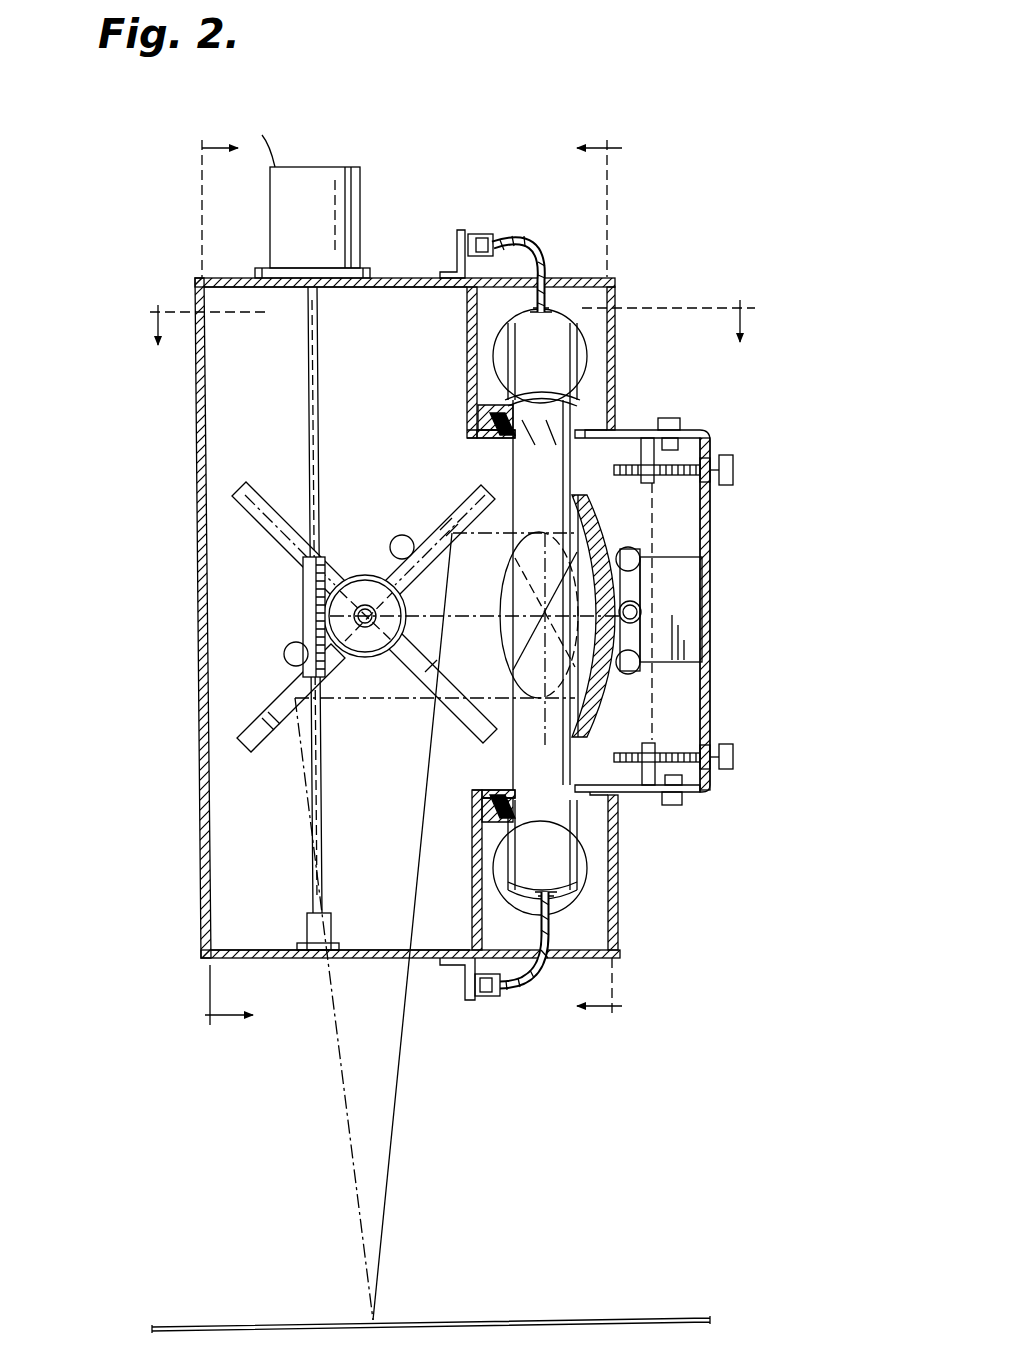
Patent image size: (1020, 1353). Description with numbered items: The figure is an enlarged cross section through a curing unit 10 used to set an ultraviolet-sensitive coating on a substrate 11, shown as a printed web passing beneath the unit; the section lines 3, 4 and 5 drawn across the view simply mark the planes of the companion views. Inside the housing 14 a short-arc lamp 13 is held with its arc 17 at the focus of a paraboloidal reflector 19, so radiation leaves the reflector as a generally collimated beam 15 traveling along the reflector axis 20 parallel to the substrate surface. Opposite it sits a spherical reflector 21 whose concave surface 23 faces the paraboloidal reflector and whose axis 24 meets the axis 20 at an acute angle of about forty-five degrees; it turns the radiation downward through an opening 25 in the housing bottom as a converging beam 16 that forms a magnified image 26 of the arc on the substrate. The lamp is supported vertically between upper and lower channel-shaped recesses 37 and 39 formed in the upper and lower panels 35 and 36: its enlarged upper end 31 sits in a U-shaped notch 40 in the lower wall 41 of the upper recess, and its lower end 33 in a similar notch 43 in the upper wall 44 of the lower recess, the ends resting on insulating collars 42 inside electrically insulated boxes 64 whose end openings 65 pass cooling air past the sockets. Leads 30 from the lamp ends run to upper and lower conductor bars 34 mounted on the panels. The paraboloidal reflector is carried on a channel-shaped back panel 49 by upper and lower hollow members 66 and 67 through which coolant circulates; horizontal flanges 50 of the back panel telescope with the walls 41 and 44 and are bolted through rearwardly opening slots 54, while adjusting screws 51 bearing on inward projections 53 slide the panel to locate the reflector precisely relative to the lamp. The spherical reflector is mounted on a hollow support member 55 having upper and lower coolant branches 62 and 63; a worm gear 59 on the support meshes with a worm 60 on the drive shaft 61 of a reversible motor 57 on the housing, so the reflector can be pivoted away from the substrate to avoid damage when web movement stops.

The section line 3- 3 is at (209, 587).
The section line 4- 4 is at (606, 582).
The section line 5- 5 is at (450, 309).
The unit 10 is at (632, 244).
The substrate 11 is at (604, 1318).
The lamp 13 is at (540, 559).
The housing 14 is at (197, 692).
The collimated beam 15 is at (522, 526).
The beam of convergent rays 16 is at (345, 1118).
The arc 17 is at (524, 640).
The paraboloidal reflector 19 is at (642, 592).
The axis of the paraboloidal reflector 20 is at (486, 615).
The spherical reflector 21 is at (256, 488).
The concave surface 23 is at (268, 750).
The axis of the spherical reflector 24 is at (428, 702).
The opening 25 is at (305, 957).
The magnified image 26 is at (375, 1318).
The leads 30 is at (532, 252).
The upper end portion 31 is at (540, 357).
The lower end portion 33 is at (540, 857).
The conductor bars 34 is at (466, 230).
The upper panel 35 is at (396, 278).
The lower panel 36 is at (256, 959).
The upper recess 37 is at (468, 352).
The lower recess 39 is at (474, 902).
The U-shaped notches 40 is at (512, 440).
The lower wall 41 is at (478, 440).
The electrically insulating collars 42 is at (490, 420).
The notches 43 is at (503, 792).
The upper wall 44 is at (480, 796).
The back panel 49 is at (712, 642).
The horizontal flanges 50 is at (702, 432).
The adjusting screws 51 is at (734, 468).
The projections 53 is at (646, 486).
The slots 54 is at (672, 420).
The support member 55 is at (366, 605).
The motor 57 is at (358, 168).
The worm gear 59 is at (352, 656).
The worm 60 is at (302, 606).
The drive shaft 61 is at (320, 358).
The upper branch 62 is at (404, 535).
The lower branch 63 is at (284, 655).
The boxes 64 is at (617, 358).
The openings 65 is at (552, 314).
The upper hollow member 66 is at (638, 554).
The lower hollow member 67 is at (638, 666).